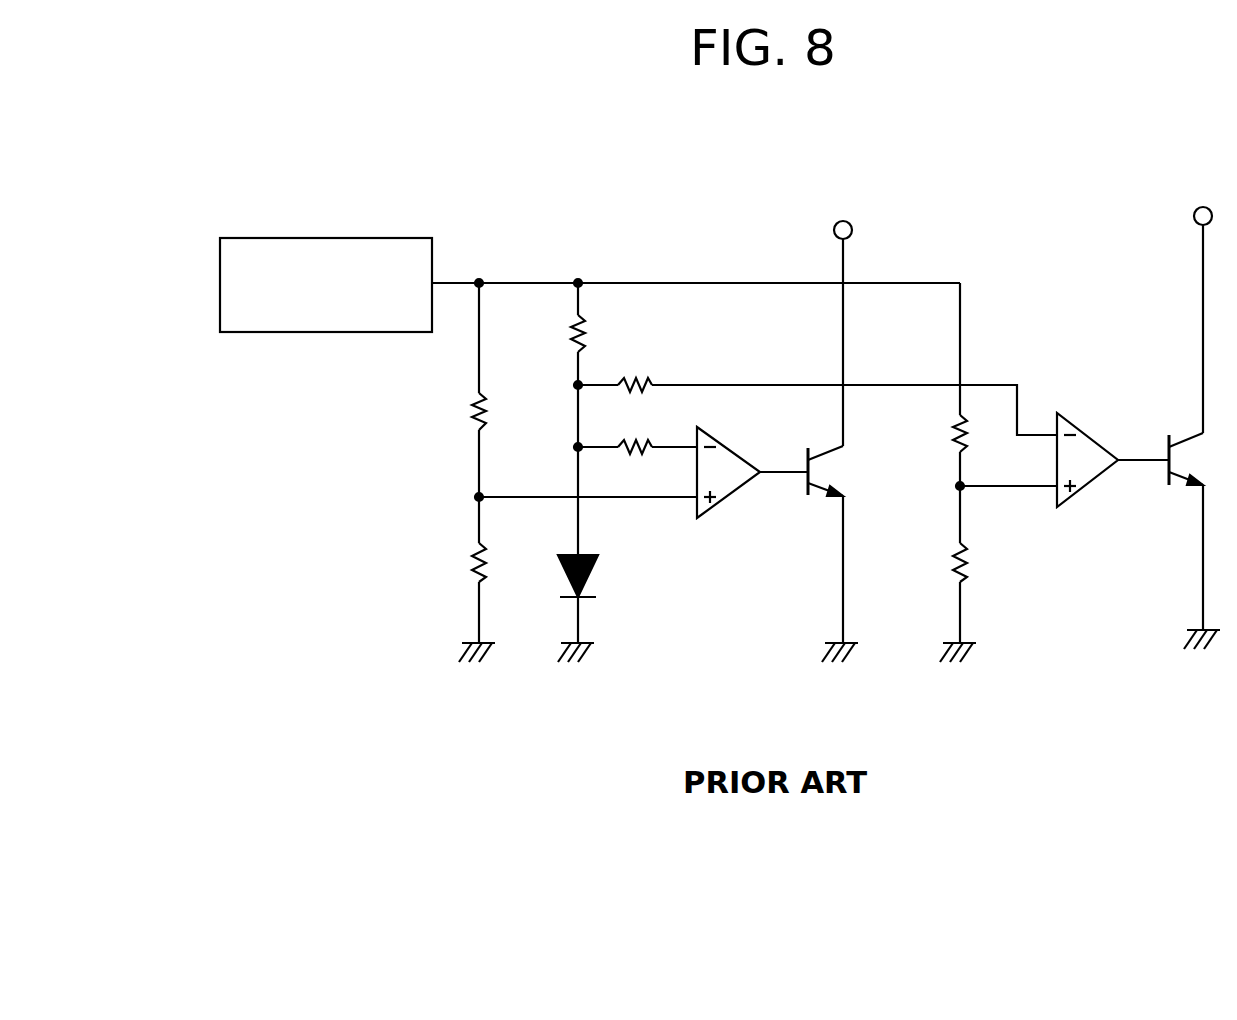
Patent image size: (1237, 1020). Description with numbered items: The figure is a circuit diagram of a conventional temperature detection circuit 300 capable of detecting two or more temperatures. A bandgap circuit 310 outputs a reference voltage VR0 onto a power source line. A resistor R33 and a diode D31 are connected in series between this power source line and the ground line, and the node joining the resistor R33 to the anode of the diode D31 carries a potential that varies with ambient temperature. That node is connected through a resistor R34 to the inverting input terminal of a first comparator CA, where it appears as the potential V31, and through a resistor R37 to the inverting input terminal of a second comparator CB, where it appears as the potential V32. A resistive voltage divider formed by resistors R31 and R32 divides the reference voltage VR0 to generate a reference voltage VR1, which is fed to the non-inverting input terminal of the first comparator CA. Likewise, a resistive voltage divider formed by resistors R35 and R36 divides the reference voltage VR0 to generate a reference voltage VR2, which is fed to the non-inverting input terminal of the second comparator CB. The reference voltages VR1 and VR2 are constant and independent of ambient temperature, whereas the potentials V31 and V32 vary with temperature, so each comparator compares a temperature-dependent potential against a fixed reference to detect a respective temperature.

The temperature detection circuit 300 is at (1111, 153).
The bandgap circuit 310 is at (394, 238).
The resistor R31 is at (453, 411).
The resistor R32 is at (451, 562).
The resistor R33 is at (552, 335).
The resistor R34 is at (621, 465).
The resistor R35 is at (933, 434).
The resistor R36 is at (933, 562).
The resistor R37 is at (619, 368).
The diode D31 is at (554, 576).
The first comparator CA is at (733, 447).
The second comparator CB is at (1090, 440).
The reference voltage VR0 is at (517, 263).
The reference voltage VR1 is at (588, 479).
The reference voltage VR2 is at (1008, 470).
The potential V31 is at (669, 428).
The potential V32 is at (854, 394).